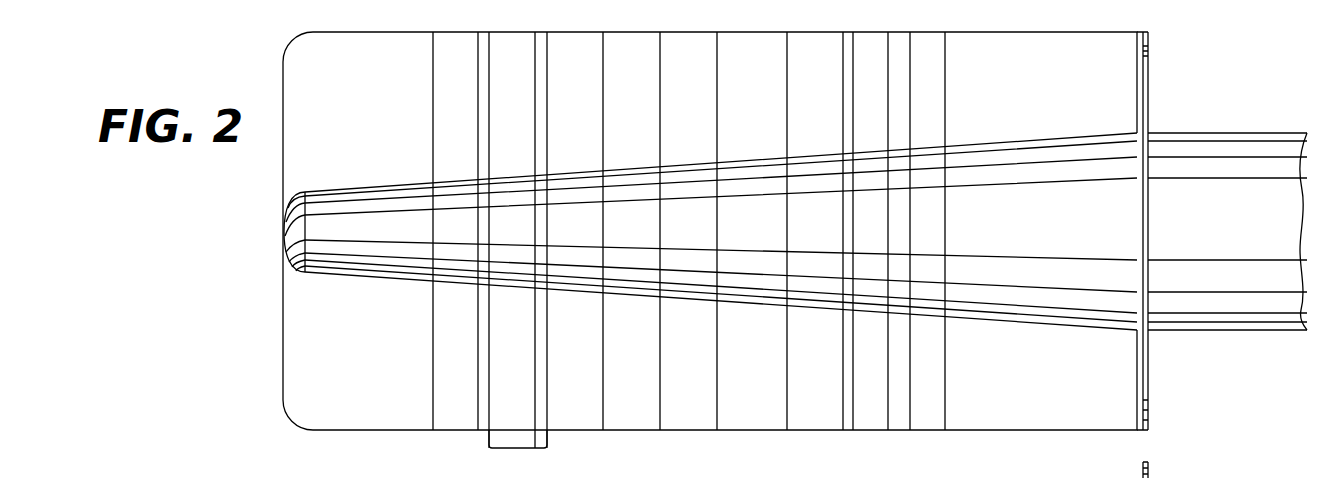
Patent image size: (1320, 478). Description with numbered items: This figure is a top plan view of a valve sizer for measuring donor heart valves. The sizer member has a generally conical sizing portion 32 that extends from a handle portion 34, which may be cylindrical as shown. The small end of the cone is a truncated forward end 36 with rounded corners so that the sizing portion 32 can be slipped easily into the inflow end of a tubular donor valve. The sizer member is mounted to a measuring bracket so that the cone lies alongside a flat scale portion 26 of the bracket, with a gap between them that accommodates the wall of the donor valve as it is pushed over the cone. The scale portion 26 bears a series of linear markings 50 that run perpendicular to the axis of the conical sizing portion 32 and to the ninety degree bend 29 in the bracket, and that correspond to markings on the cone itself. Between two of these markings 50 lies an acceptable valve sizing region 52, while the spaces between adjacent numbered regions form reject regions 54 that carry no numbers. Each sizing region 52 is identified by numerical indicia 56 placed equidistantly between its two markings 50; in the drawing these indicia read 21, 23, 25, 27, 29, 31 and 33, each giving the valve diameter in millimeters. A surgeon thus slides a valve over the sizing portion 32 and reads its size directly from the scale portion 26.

The first station 21 is at (455, 231).
The second station 23 is at (512, 231).
The third station 25 is at (575, 231).
The fourth station 27 is at (688, 231).
The bend 29 is at (815, 231).
The sixth station 31 is at (870, 231).
The seventh station 33 is at (927, 231).
The scale portion 26 is at (372, 369).
The conical sizing portion 32 is at (1036, 322).
The handle portion 34 is at (1188, 132).
The truncated forward end 36 is at (283, 282).
The linear markings 50 is at (600, 401).
The acceptable valve sizing region 52 is at (512, 452).
The reject region 54 is at (540, 452).
The numerical indicia 56 is at (518, 50).